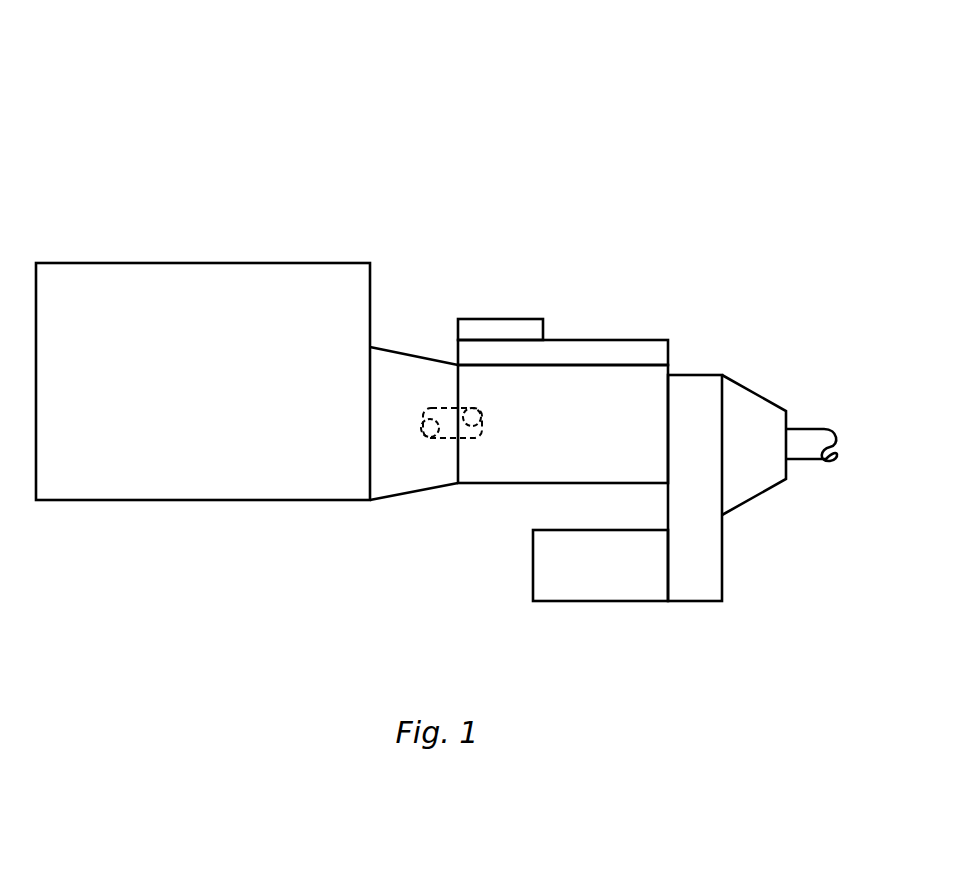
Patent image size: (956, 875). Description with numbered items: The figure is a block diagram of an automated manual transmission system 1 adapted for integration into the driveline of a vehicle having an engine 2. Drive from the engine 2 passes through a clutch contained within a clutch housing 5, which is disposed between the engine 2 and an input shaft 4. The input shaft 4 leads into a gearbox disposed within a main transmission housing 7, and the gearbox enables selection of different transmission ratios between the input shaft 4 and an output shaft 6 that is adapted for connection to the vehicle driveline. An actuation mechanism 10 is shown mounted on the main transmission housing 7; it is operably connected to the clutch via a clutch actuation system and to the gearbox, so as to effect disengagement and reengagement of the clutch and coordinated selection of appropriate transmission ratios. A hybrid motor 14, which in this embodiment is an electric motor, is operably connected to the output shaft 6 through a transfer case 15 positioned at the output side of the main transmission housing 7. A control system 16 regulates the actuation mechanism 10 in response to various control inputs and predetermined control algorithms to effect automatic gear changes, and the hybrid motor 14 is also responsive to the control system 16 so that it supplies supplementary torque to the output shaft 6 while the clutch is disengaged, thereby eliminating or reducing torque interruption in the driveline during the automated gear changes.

The automated manual transmission system 1 is at (134, 122).
The engine 2 is at (203, 487).
The input shaft 4 is at (446, 420).
The clutch housing 5 is at (400, 372).
The output shaft 6 is at (805, 440).
The main transmission housing 7 is at (540, 462).
The actuation mechanism 10 is at (596, 352).
The hybrid motor 14 is at (578, 581).
The transfer case 15 is at (700, 558).
The control system 16 is at (504, 334).